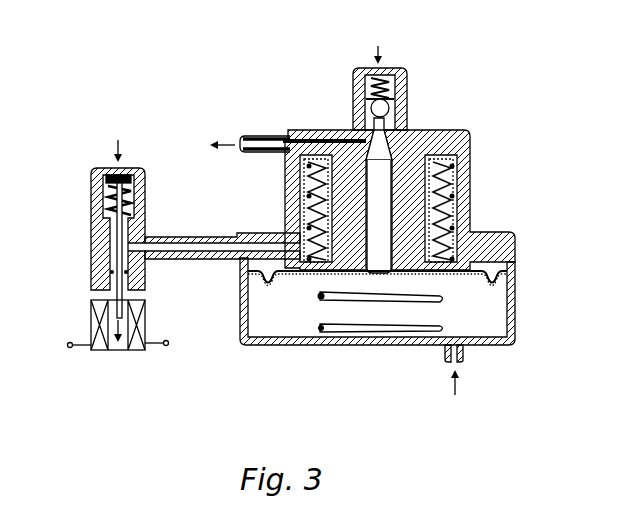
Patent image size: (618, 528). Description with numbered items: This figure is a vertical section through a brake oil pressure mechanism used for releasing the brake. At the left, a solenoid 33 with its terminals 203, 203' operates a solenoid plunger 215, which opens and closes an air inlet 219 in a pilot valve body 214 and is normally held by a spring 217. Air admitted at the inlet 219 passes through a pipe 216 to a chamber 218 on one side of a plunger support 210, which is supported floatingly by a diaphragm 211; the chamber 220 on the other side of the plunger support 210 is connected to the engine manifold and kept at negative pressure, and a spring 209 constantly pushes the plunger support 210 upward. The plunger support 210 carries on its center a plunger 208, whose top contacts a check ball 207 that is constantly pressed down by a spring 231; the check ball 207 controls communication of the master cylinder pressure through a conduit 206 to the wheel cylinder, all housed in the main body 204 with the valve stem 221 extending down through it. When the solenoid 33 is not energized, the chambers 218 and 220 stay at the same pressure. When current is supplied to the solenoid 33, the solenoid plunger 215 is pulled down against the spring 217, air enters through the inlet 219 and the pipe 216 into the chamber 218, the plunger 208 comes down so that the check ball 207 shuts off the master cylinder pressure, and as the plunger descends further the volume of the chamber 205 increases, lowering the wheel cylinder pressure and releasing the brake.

The valve housing body 204 is at (393, 128).
The conduit 206 is at (296, 140).
The plunger 208 is at (352, 150).
The chamber 205 is at (372, 150).
The check ball 207 is at (386, 108).
The spring 231 is at (366, 78).
The valve stem 221 is at (400, 276).
The chamber 220 is at (497, 300).
The diaphragm 211 is at (265, 279).
The spring 209 is at (320, 298).
The plunger support 210 is at (478, 348).
The pipe 216 is at (205, 236).
The chamber 218 is at (240, 265).
The pilot valve body 214 is at (155, 188).
The air inlet 219 is at (125, 172).
The spring 217 is at (90, 208).
The solenoid plunger 215 is at (124, 322).
The solenoid 33 is at (97, 352).
The terminal 203 is at (58, 341).
The terminal 203' is at (175, 353).